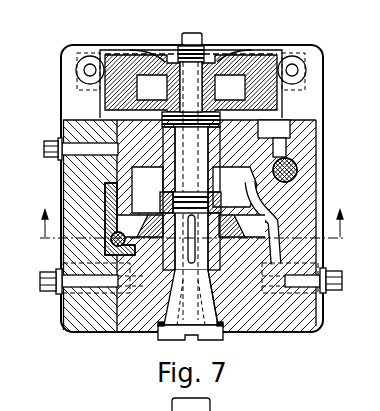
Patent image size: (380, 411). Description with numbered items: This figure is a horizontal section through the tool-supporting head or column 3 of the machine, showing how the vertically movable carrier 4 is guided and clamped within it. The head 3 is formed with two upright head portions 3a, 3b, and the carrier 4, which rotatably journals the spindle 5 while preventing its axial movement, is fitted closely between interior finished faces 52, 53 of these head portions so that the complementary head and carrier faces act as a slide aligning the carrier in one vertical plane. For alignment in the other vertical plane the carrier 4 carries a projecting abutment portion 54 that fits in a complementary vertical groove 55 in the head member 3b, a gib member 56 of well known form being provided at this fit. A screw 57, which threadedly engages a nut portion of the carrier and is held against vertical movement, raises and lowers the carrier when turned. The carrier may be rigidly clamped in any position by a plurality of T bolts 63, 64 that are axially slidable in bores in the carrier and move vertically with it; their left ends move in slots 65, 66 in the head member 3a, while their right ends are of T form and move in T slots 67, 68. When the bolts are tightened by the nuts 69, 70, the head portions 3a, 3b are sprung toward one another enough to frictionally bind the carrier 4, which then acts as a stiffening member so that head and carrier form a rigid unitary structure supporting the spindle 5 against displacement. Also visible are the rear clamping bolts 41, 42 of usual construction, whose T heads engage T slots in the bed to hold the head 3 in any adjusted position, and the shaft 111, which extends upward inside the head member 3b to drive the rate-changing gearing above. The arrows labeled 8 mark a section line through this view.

The head 3 is at (203, 188).
The head portion 3a is at (78, 181).
The head member 3b is at (312, 206).
The carrier 4 is at (242, 326).
The spindle 5 is at (158, 336).
The section line 8 is at (192, 236).
The rear bolt 41 is at (190, 205).
The rear bolt 42 is at (190, 205).
The interior finished face 52 is at (298, 187).
The interior finished face 53 is at (87, 120).
The projecting abutment portion 54 is at (146, 239).
The vertical groove 55 is at (124, 180).
The gib member 56 is at (161, 196).
The screw 57 is at (125, 243).
The T bolt 63 is at (62, 129).
The T bolt 64 is at (63, 293).
The slot 65 is at (106, 190).
The slot 66 is at (63, 264).
The T slot 67 is at (284, 141).
The T slot 68 is at (278, 318).
The nut 69 is at (43, 152).
The nut 70 is at (43, 273).
The shaft 111 is at (297, 173).